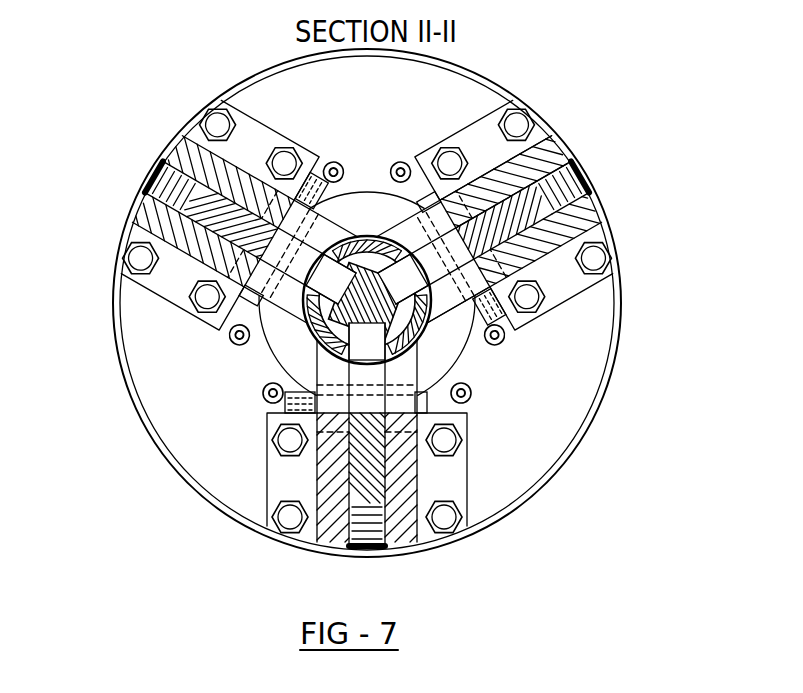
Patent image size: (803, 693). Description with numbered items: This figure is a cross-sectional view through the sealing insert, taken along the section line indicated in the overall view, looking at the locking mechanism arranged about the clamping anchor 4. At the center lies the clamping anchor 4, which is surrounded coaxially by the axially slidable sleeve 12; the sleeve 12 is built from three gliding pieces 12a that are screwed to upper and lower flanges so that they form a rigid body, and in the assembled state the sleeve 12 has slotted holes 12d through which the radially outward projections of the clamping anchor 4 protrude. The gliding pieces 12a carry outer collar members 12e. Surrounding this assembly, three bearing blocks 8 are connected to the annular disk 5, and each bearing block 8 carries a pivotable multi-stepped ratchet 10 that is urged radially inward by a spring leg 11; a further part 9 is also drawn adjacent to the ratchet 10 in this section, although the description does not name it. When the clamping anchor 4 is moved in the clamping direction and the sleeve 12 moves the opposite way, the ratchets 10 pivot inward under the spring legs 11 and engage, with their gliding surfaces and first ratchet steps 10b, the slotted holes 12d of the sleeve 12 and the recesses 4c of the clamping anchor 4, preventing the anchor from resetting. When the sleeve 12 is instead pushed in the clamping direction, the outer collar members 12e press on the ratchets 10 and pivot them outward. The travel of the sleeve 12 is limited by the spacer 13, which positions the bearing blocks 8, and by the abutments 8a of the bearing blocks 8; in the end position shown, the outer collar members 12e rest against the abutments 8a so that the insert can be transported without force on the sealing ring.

The clamping anchor 4 is at (345, 318).
The recesses of the clamping anchor 4c is at (320, 350).
The annular disk 5 is at (228, 460).
The bearing blocks 8 is at (405, 447).
The abutments of the bearing blocks 8a is at (292, 158).
The guide block 9 is at (533, 172).
The ratchets 10 is at (550, 214).
The first ratchet steps 10b is at (547, 192).
The spring legs 11 is at (385, 553).
The sleeve 12 is at (418, 358).
The gliding pieces 12a is at (412, 350).
The slotted holes 12d is at (470, 402).
The outer collar members 12e is at (440, 332).
The spacer 13 is at (373, 212).